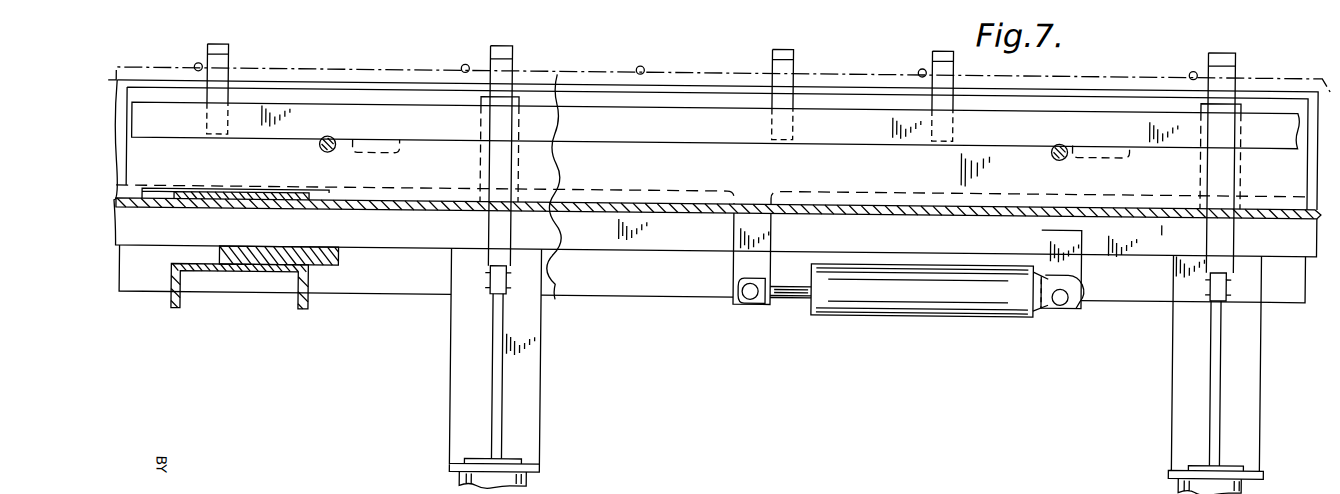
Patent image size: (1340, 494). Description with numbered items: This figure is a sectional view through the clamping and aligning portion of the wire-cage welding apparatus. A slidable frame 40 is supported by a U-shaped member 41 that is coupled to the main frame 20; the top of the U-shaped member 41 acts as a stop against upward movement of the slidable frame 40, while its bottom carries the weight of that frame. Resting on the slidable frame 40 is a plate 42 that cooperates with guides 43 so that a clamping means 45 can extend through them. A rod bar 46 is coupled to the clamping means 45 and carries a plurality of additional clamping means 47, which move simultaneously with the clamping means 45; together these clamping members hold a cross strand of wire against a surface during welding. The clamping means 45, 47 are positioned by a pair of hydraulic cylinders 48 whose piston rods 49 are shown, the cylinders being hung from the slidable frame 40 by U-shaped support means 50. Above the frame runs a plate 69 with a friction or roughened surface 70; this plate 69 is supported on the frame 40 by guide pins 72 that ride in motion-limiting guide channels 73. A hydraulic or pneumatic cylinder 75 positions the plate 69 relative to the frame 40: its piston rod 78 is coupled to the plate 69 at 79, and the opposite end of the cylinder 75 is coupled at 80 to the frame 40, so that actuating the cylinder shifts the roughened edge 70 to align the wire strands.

The frame 20 is at (397, 299).
The slidable frame 40 is at (170, 222).
The U-shaped member 41 is at (251, 265).
The plate 42 is at (244, 172).
The guides 43 is at (483, 175).
The clamping means 45 is at (506, 64).
The rod bar 46 is at (690, 120).
The additional clamping means 47 is at (228, 64).
The hydraulic cylinders 48 is at (528, 473).
The piston rods 49 is at (499, 406).
The U-shaped support means 50 is at (533, 366).
The plate 69 is at (308, 86).
The friction or roughened surface 70 is at (150, 69).
The guide pins 72 is at (323, 148).
The motion-limiting guide channels 73 is at (357, 152).
The hydraulic or pneumatic cylinder 75 is at (908, 282).
The piston rod 78 is at (795, 289).
The coupling of piston rod to plate 79 is at (1060, 292).
The coupling of cylinder to frame 80 is at (750, 289).